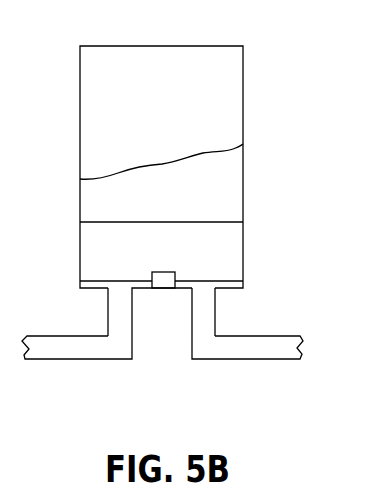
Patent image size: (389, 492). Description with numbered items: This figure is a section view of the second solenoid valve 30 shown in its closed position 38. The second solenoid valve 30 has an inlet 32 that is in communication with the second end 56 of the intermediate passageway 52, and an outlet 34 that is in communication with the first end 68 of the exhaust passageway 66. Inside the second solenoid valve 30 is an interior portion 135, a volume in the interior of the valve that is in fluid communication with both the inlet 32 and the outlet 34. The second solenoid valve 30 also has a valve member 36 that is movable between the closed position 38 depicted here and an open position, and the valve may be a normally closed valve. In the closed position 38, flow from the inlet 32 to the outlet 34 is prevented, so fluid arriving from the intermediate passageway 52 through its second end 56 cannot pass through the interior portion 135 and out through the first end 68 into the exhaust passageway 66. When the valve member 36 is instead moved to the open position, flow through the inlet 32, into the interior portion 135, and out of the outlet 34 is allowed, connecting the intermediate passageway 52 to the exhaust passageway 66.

The second solenoid valve 30 is at (258, 64).
The closed position 38 is at (271, 194).
The interior portion 135 is at (220, 257).
The valve member 36 is at (152, 273).
The inlet 32 is at (108, 291).
The outlet 34 is at (215, 292).
The second end of the intermediate passageway 56 is at (110, 318).
The first end of the exhaust passageway 68 is at (207, 320).
The intermediate passageway 52 is at (76, 348).
The exhaust passageway 66 is at (250, 347).